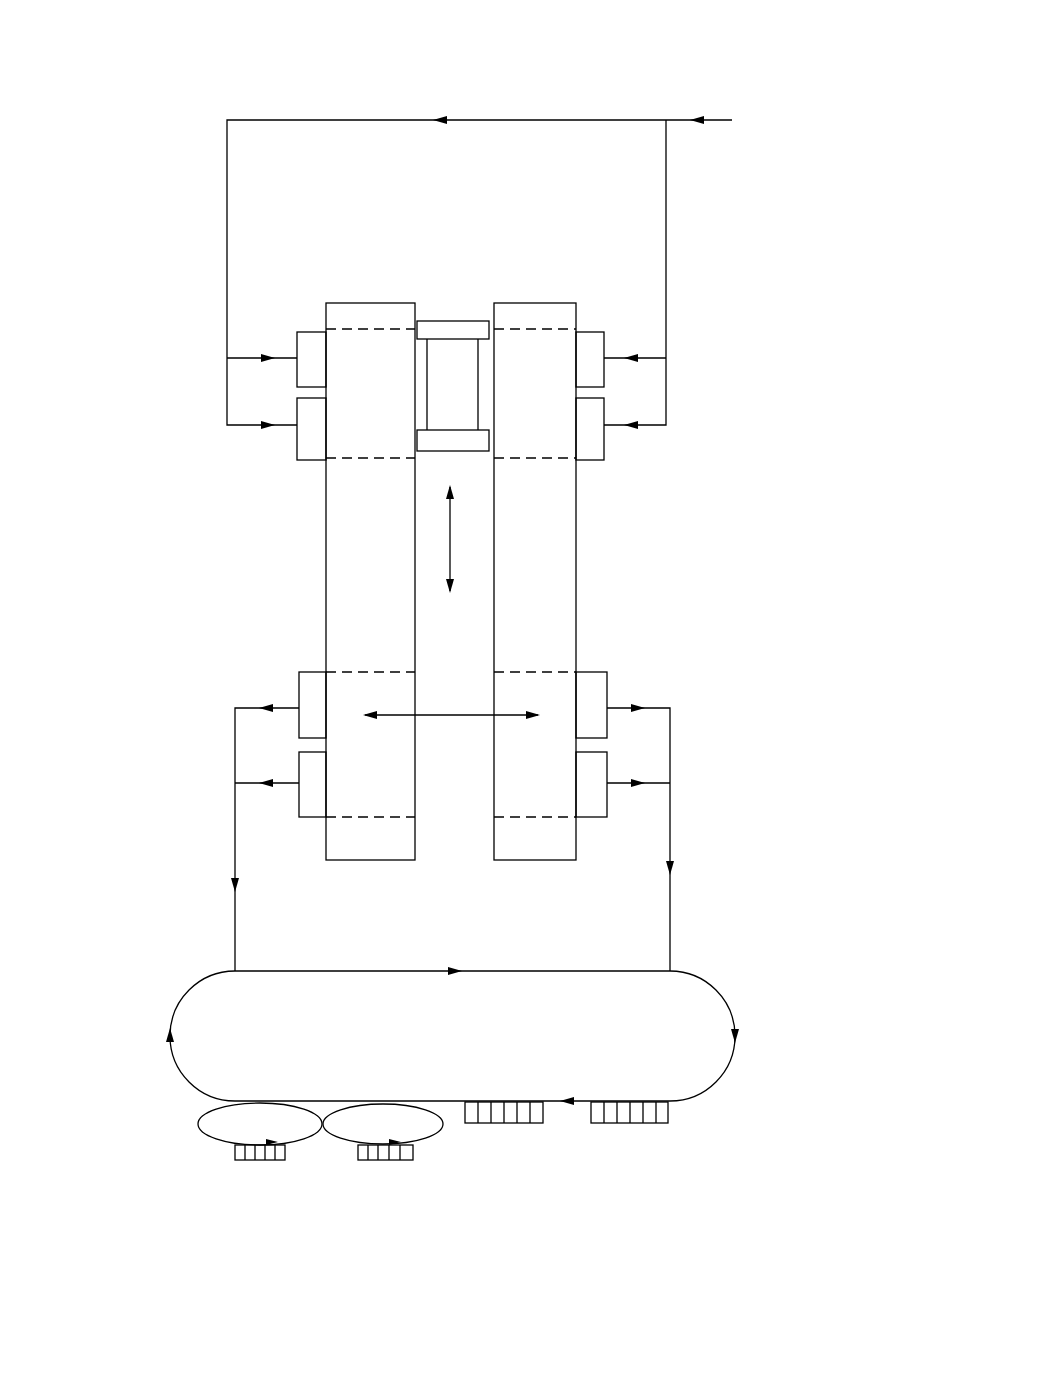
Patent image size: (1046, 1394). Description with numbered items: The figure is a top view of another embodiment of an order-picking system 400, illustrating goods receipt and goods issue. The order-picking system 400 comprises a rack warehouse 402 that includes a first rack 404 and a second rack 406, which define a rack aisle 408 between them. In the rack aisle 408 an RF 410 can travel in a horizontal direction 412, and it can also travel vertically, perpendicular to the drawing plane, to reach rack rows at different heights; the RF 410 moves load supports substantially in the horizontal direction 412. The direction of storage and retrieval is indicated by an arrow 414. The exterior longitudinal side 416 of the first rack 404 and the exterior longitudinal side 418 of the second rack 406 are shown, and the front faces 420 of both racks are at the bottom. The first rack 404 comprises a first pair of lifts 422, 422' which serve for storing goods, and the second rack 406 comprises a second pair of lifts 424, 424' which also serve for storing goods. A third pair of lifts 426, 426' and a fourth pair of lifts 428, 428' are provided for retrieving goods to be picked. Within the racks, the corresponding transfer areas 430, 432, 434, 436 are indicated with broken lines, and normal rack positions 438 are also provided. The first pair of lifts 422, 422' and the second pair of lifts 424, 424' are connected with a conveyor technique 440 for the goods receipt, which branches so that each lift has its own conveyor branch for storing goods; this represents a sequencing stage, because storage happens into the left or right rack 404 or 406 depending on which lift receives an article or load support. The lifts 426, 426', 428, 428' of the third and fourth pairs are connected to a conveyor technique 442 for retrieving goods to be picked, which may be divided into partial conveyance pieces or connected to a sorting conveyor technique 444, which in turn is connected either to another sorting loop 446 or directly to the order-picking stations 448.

The order-picking system 400 is at (668, 543).
The rack warehouse 402 is at (226, 548).
The first rack 404 is at (358, 298).
The second rack 406 is at (531, 298).
The rack aisle 408 is at (450, 298).
The RF 410 is at (438, 388).
The horizontal direction 412 is at (451, 528).
The arrow 414 is at (462, 714).
The exterior longitudinal side 416 is at (326, 509).
The exterior longitudinal side 418 is at (586, 508).
The front faces 420 is at (378, 860).
The lift of first pair of lifts 422 is at (297, 307).
The lift of first pair of lifts 422' is at (223, 405).
The lift of second pair of lifts 424 is at (675, 326).
The lift of second pair of lifts 424' is at (685, 416).
The lift of third pair of lifts 426 is at (245, 677).
The lift of third pair of lifts 426' is at (221, 770).
The lift of fourth pair of lifts 428 is at (658, 673).
The lift of fourth pair of lifts 428' is at (689, 769).
The transfer area 430 is at (356, 405).
The transfer area 432 is at (517, 405).
The transfer area 434 is at (359, 787).
The transfer area 436 is at (521, 787).
The rack positions 438 is at (359, 627).
The conveyor technique for goods receipt 440 is at (535, 120).
The conveyor technique for retrieving goods 442 is at (671, 920).
The sorting conveyor technique 444 is at (723, 1003).
The sorting loop 446 is at (198, 1120).
The order-picking stations 448 is at (265, 1162).